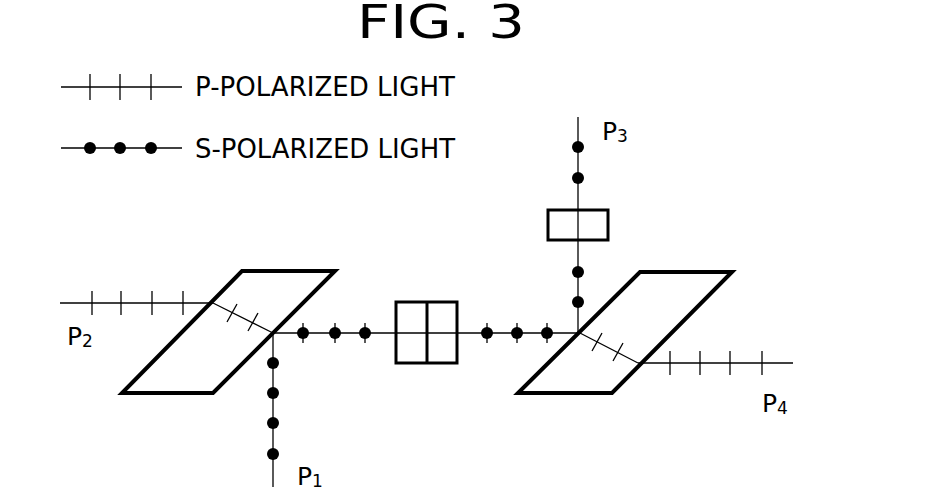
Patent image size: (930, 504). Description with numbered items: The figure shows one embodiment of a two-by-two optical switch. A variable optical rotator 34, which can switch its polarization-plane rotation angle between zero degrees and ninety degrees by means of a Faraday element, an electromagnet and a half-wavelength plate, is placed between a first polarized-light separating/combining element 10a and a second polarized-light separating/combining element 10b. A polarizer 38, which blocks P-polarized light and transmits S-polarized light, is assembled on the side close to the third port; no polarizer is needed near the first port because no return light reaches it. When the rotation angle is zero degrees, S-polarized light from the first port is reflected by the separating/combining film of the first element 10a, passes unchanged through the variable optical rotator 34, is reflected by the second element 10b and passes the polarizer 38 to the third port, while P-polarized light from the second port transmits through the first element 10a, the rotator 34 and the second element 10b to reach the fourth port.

The first polarized-light separating/combining element 10a is at (282, 270).
The second polarized-light separating/combining element 10b is at (695, 272).
The variable optical rotator 34 is at (430, 295).
The polarizer 38 is at (593, 219).